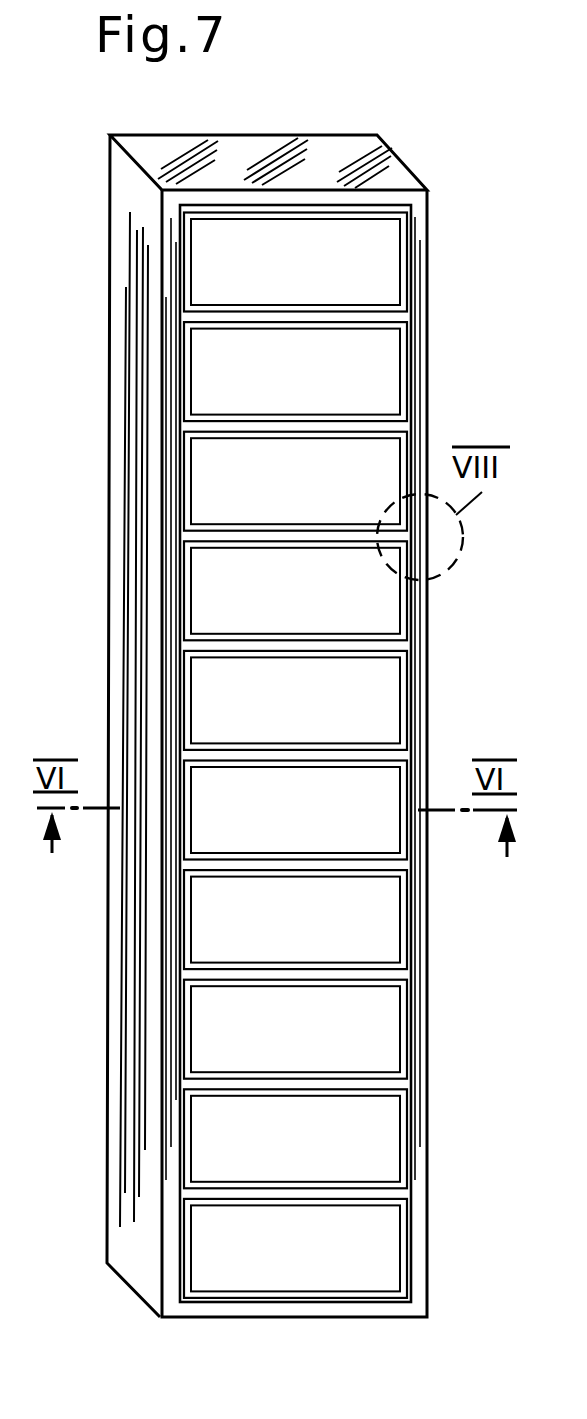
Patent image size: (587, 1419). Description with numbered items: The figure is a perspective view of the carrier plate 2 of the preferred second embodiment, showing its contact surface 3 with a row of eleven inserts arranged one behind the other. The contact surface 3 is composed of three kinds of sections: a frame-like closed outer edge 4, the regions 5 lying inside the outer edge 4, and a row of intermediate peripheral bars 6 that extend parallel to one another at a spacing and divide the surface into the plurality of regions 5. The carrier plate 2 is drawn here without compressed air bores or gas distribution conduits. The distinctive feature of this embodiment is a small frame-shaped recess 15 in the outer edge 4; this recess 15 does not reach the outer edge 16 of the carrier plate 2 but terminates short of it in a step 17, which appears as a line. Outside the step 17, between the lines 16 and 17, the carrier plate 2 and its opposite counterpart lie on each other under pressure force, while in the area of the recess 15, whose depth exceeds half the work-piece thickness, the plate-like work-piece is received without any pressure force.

The carrier plate 2 is at (133, 1242).
The contact surface 3 is at (365, 725).
The outer edge 4 is at (423, 220).
The region 5 is at (237, 1257).
The intermediate peripheral bars 6 is at (380, 865).
The recess 15 is at (352, 1333).
The outer edge line 16 is at (267, 190).
The step 17 is at (413, 1070).